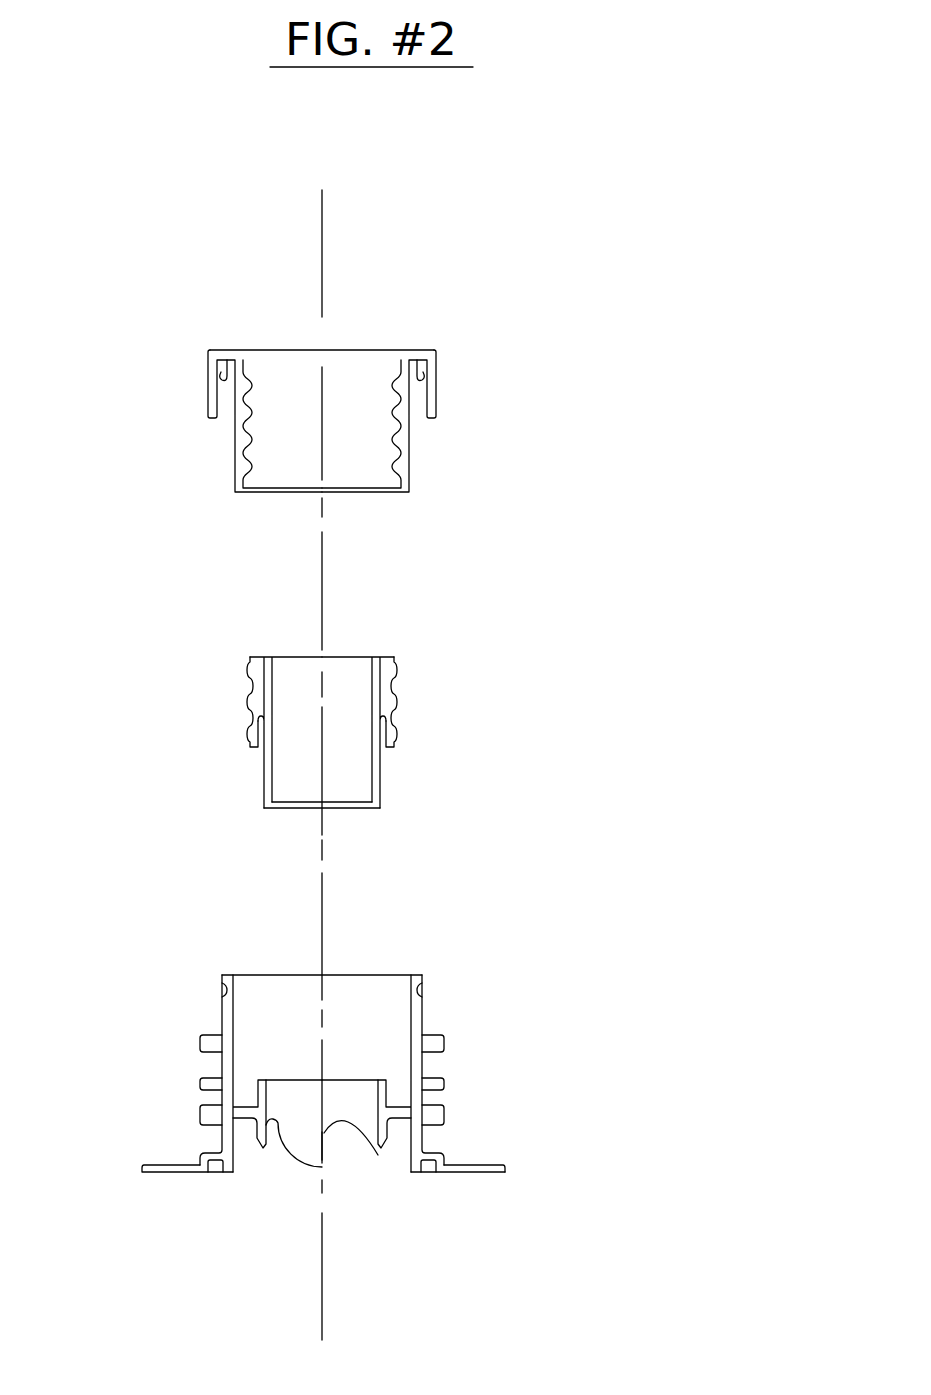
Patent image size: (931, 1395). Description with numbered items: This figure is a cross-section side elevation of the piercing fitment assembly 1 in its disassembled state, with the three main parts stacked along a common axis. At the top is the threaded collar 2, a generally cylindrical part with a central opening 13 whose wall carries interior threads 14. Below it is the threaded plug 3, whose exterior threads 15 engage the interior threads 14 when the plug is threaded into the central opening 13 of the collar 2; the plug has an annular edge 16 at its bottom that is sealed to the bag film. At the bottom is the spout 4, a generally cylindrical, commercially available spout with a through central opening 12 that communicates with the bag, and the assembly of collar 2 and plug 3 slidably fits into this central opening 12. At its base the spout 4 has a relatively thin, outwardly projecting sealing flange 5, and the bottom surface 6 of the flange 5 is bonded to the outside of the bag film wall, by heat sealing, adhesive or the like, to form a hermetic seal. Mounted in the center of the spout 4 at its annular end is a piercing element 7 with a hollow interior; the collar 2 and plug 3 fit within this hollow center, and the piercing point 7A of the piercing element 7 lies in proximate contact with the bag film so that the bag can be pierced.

The piercing fitment assembly 1 is at (242, 322).
The threaded collar 2 is at (463, 388).
The threaded plug 3 is at (443, 737).
The spout 4 is at (487, 1047).
The sealing flange 5 is at (480, 1162).
The bottom surface of flange 6 is at (480, 1177).
The piercing element 7 is at (303, 1170).
The piercing point 7A is at (325, 1167).
The central opening of spout 12 is at (390, 970).
The central opening of threaded collar 13 is at (322, 347).
The interior threads 14 is at (380, 460).
The exterior threads 15 is at (412, 690).
The annular edge of threaded plug 16 is at (360, 813).